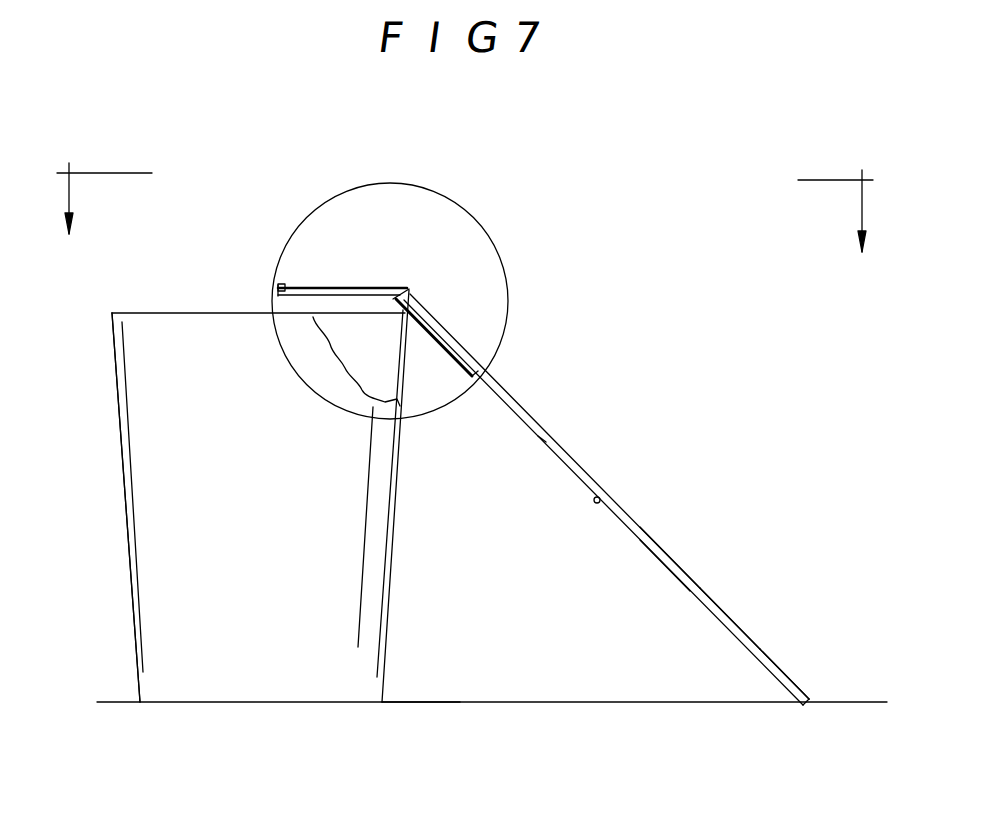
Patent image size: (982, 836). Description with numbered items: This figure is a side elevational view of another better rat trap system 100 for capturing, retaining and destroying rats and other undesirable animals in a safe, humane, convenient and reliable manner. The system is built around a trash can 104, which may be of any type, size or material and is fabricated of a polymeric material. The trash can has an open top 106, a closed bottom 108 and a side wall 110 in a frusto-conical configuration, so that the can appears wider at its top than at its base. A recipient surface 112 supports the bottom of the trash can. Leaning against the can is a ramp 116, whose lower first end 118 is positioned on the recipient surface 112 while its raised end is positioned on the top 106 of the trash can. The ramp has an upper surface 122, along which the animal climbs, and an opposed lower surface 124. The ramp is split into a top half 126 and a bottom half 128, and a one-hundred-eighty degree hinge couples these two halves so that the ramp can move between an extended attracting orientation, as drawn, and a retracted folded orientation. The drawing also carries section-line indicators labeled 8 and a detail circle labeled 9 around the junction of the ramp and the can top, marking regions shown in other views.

The section line for FIG. 8 is at (470, 199).
The detail circle for FIG. 9 is at (477, 218).
The better rat trap system 100 is at (652, 496).
The trash can 104 is at (242, 513).
The open top 106 is at (220, 312).
The closed bottom 108 is at (240, 702).
The side wall 110 is at (130, 578).
The recipient surface 112 is at (407, 702).
The ramp 116 is at (607, 493).
The lower first end 118 is at (807, 692).
The upper surface 122 is at (660, 548).
The lower surface 124 is at (660, 568).
The top half 126 is at (543, 432).
The bottom half 128 is at (707, 597).